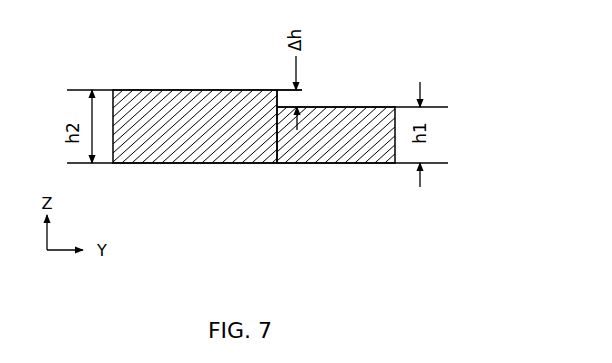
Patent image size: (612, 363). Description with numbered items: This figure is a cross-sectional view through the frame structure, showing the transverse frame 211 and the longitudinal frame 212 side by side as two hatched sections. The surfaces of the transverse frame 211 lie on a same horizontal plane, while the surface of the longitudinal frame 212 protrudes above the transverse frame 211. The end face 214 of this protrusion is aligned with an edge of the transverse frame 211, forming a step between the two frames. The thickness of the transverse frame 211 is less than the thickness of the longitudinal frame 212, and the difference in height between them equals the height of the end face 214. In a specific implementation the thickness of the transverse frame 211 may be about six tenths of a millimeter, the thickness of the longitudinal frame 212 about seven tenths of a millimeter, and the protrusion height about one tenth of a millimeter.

The transverse frame 211 is at (332, 133).
The longitudinal frame 212 is at (192, 117).
The end face 214 is at (276, 102).